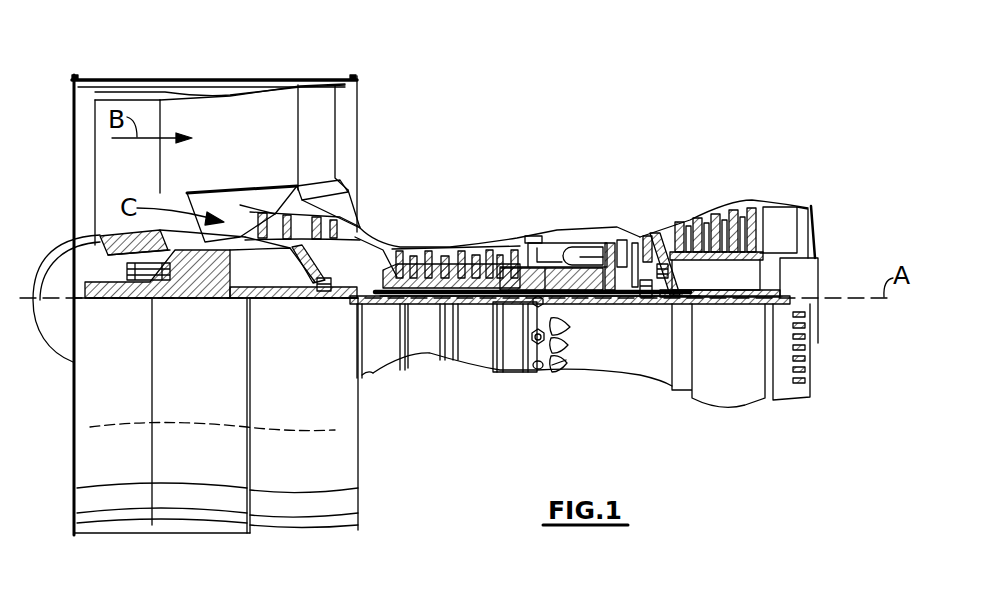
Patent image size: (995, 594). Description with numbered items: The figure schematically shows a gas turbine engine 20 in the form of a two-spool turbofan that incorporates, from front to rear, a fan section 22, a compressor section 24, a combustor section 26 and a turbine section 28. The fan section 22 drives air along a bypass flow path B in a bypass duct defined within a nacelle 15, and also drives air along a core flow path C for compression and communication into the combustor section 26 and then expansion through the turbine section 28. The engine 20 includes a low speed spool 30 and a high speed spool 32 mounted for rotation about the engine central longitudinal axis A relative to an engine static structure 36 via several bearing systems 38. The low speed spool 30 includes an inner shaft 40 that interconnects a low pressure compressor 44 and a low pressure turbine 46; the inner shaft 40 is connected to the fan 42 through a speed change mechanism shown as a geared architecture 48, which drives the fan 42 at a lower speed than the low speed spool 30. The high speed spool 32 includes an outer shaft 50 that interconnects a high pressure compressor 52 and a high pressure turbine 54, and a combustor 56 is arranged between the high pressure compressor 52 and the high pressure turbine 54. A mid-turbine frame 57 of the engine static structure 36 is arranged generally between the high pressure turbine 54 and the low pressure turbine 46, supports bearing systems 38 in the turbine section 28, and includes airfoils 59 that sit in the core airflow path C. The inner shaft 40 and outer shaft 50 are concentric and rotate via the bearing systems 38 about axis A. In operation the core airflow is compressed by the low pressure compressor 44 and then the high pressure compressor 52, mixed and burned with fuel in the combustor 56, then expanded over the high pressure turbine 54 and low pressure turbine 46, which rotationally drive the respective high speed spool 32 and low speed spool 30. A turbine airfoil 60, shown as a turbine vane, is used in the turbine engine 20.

The nacelle 15 is at (210, 80).
The gas turbine engine 20 is at (572, 121).
The fan section 22 is at (163, 70).
The compressor section 24 is at (391, 228).
The combustor section 26 is at (564, 212).
The turbine section 28 is at (691, 185).
The low speed spool 30 is at (479, 312).
The high speed spool 32 is at (516, 262).
The engine static structure 36 is at (512, 375).
The bearing systems 38 is at (323, 292).
The inner shaft 40 is at (371, 302).
The fan 42 is at (143, 185).
The low pressure compressor 44 is at (287, 228).
The low pressure turbine 46 is at (719, 208).
The geared architecture 48 is at (221, 287).
The outer shaft 50 is at (577, 298).
The high pressure compressor 52 is at (466, 252).
The high pressure turbine 54 is at (660, 226).
The combustor 56 is at (573, 254).
The mid-turbine frame 57 is at (666, 232).
The airfoils 59 is at (672, 273).
The turbine airfoil 60 is at (682, 228).